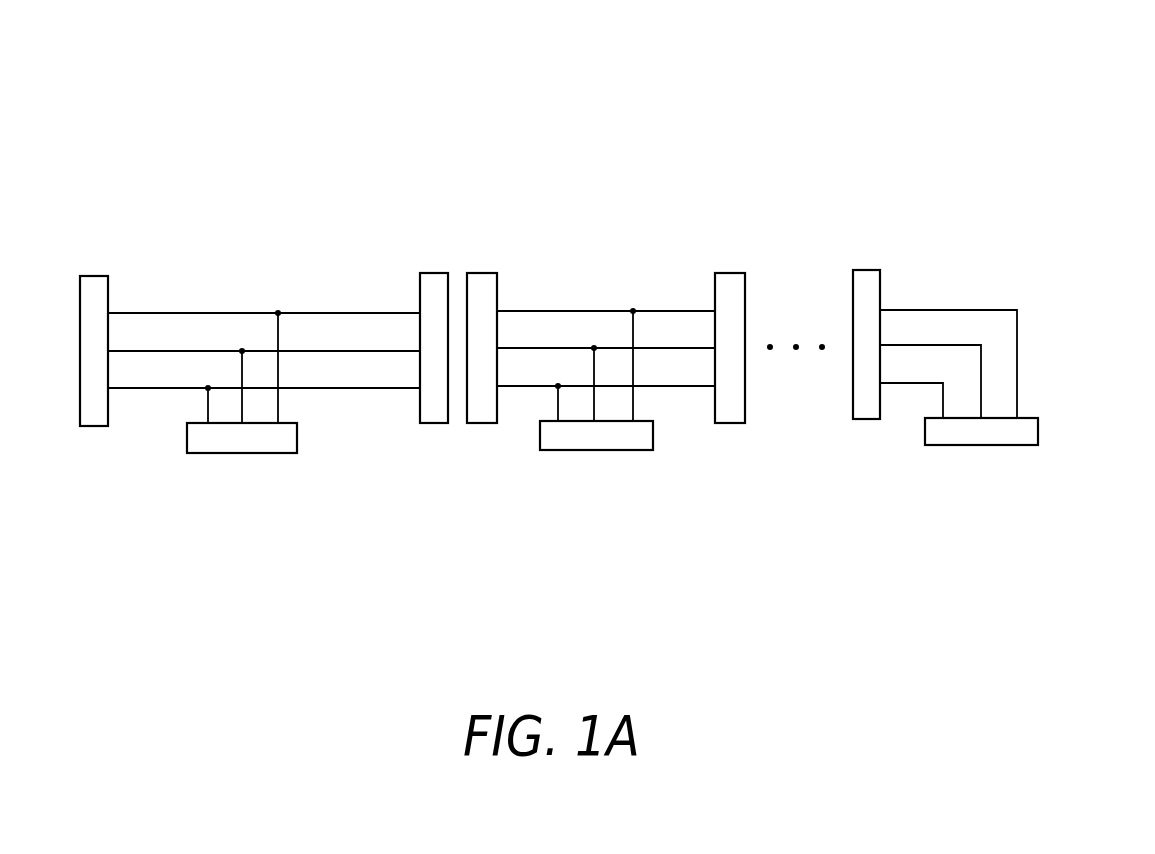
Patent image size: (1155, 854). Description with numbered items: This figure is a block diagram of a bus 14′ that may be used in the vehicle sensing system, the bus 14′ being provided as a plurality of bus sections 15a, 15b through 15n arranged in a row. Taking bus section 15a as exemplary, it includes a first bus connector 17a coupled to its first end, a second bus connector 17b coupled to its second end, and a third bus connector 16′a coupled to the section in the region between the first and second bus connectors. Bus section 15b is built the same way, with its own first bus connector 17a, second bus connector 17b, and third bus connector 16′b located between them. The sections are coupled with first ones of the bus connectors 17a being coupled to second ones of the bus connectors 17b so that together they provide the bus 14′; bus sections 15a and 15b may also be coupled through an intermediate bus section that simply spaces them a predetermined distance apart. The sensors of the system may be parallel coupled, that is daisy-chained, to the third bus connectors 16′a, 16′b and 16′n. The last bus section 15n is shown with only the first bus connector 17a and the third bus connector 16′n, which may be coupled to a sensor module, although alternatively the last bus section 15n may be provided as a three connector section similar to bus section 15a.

The bus 14′ is at (1006, 103).
The bus section 15a is at (250, 246).
The bus section 15b is at (626, 248).
The last bus section 15n is at (1024, 230).
The first bus connector 17a is at (88, 276).
The second bus connector 17b is at (432, 273).
The third bus connector 16′a is at (293, 452).
The third bus connector 16′b is at (645, 450).
The third bus connector 16′n is at (1000, 445).